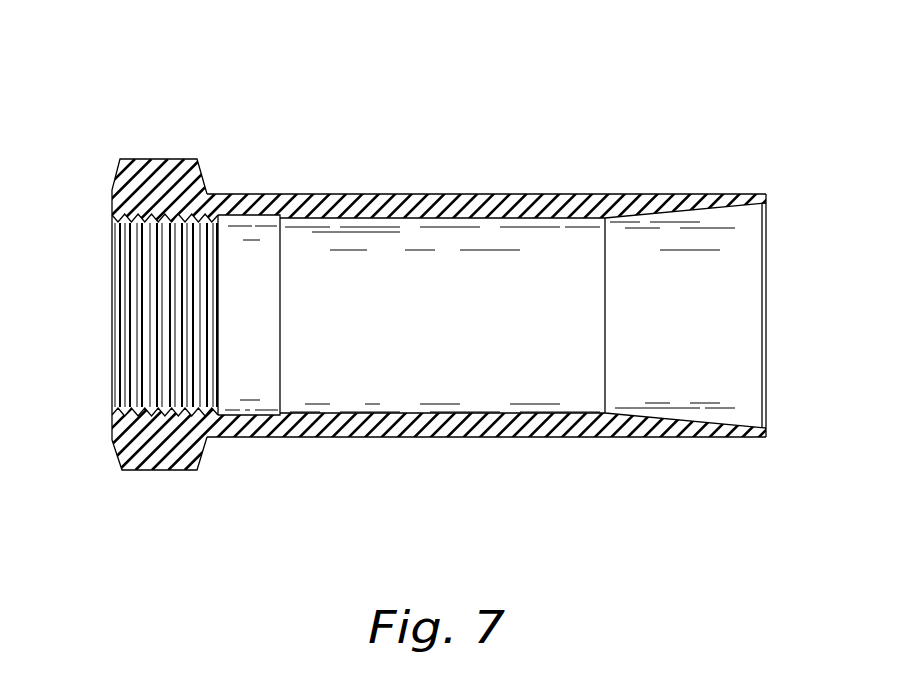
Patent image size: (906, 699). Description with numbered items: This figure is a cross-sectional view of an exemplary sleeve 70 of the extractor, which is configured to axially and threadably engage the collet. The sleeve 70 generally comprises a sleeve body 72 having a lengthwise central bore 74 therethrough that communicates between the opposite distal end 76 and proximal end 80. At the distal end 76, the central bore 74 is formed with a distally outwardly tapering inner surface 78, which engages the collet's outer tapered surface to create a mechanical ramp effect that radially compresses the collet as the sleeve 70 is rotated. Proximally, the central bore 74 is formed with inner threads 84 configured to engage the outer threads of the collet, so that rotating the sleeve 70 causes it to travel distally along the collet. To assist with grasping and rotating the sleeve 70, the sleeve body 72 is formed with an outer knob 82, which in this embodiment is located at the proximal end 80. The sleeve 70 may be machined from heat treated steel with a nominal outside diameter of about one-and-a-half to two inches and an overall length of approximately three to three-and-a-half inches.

The sleeve 70 is at (453, 248).
The sleeve body 72 is at (521, 96).
The central bore 74 is at (438, 372).
The distal end 76 is at (723, 121).
The inner tapered surface 78 is at (708, 210).
The proximal end 80 is at (233, 104).
The outer knob 82 is at (162, 124).
The inner threads 84 is at (137, 330).